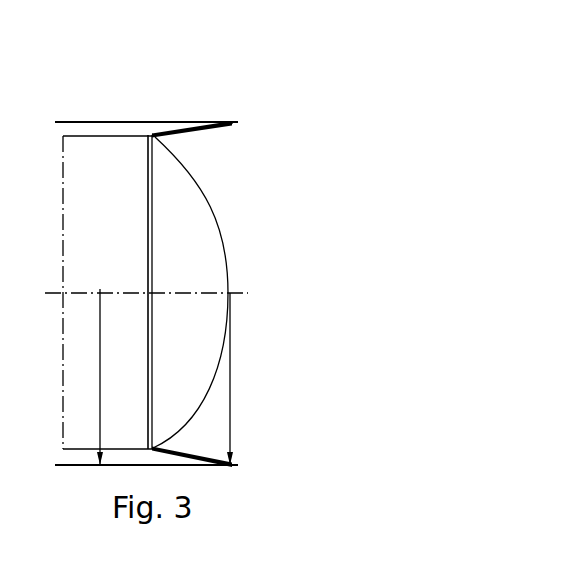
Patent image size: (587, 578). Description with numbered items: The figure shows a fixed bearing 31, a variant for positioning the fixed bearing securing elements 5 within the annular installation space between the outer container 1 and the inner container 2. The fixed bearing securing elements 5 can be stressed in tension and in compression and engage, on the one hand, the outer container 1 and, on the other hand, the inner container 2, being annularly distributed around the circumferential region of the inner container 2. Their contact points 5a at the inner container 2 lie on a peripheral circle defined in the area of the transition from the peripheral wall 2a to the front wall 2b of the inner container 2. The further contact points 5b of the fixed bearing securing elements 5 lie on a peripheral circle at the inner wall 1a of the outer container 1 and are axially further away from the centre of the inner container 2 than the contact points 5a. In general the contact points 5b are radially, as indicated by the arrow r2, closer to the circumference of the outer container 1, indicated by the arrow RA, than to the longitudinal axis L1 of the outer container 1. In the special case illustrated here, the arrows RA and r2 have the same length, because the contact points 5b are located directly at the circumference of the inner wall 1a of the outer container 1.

The outer container 1 is at (86, 122).
The inner wall of the outer container 1a is at (63, 123).
The inner container 2 is at (108, 137).
The outer wall of the inner container 2a is at (130, 136).
The front wall of the inner container 2b is at (227, 245).
The fixed bearing securing elements 5 is at (195, 132).
The contact points at the inner container 5a is at (158, 140).
The contact points at the outer container 5b is at (232, 126).
The fixed bearing 31 is at (208, 100).
The longitudinal axis of the outer container L1 is at (130, 292).
The arrow indicating the circumference of the outer container RA is at (86, 377).
The arrow indicating the radial position of the contact points r2 is at (217, 379).